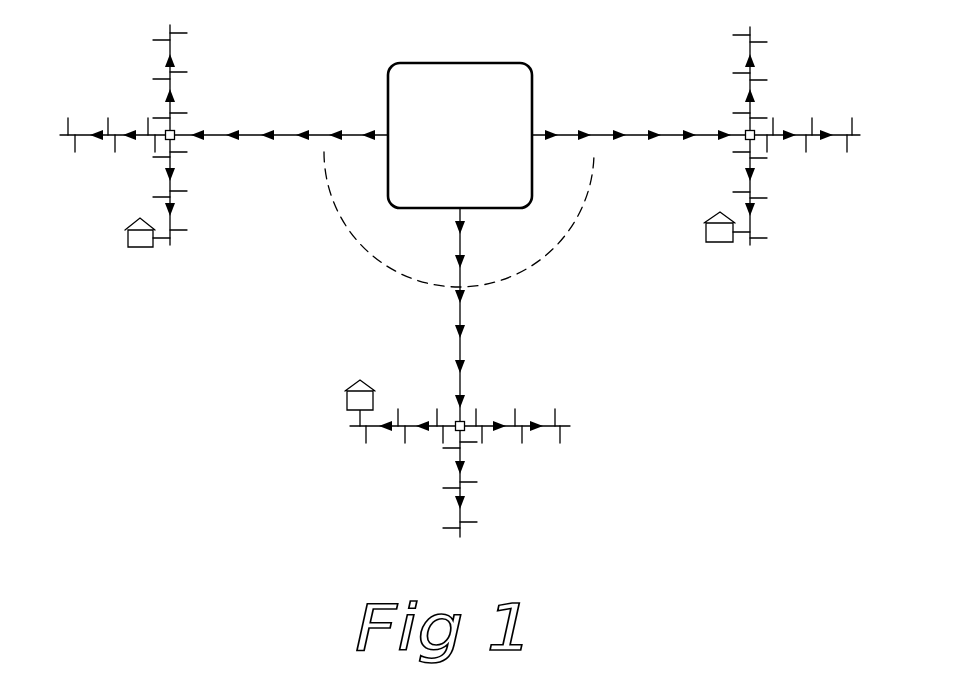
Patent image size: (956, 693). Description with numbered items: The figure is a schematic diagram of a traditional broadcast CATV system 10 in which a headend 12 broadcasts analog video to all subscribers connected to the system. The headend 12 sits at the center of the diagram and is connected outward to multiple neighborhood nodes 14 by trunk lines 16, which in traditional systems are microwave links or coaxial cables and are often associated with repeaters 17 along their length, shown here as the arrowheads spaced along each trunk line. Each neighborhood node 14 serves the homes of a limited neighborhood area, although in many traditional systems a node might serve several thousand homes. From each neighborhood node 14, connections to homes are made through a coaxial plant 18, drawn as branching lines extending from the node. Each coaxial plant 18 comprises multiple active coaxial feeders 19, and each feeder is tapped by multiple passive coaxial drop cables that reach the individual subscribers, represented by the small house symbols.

The CATV system 10 is at (623, 325).
The headend 12 is at (424, 76).
The neighborhood node 14 is at (174, 131).
The trunk line 16 is at (282, 137).
The repeater 17 is at (368, 133).
The coaxial plant 18 is at (206, 181).
The active coaxial feeder 19 is at (140, 133).